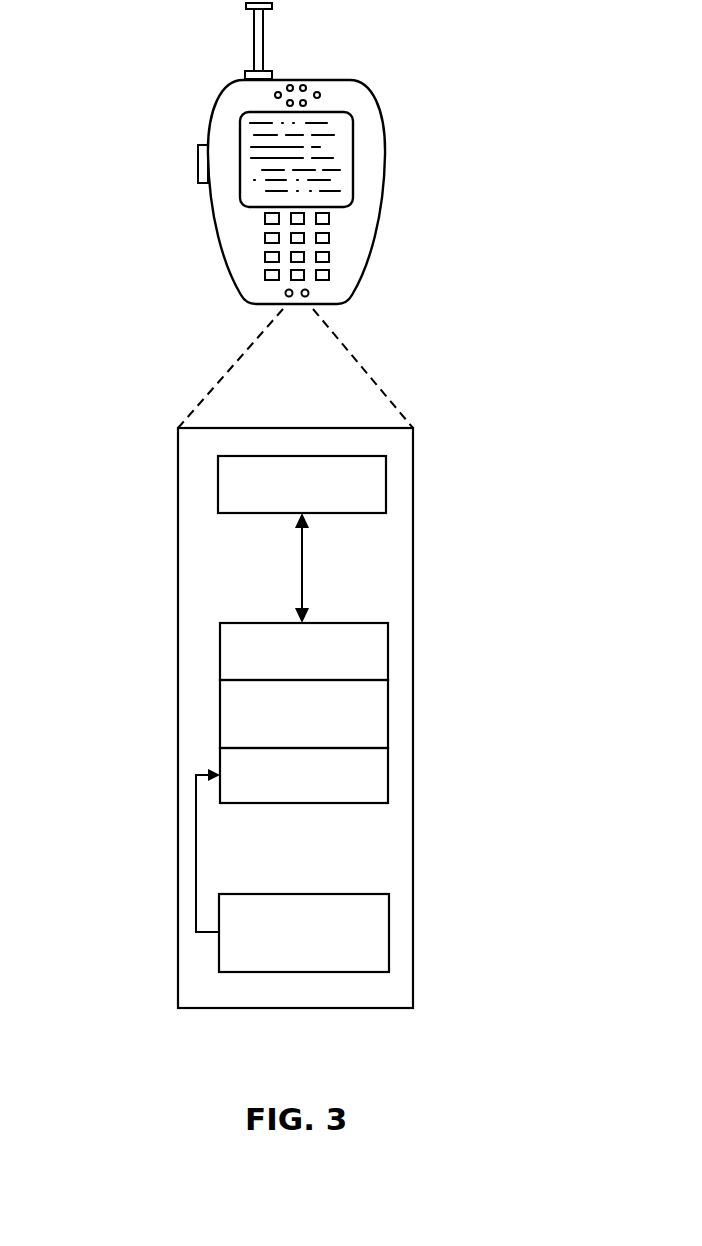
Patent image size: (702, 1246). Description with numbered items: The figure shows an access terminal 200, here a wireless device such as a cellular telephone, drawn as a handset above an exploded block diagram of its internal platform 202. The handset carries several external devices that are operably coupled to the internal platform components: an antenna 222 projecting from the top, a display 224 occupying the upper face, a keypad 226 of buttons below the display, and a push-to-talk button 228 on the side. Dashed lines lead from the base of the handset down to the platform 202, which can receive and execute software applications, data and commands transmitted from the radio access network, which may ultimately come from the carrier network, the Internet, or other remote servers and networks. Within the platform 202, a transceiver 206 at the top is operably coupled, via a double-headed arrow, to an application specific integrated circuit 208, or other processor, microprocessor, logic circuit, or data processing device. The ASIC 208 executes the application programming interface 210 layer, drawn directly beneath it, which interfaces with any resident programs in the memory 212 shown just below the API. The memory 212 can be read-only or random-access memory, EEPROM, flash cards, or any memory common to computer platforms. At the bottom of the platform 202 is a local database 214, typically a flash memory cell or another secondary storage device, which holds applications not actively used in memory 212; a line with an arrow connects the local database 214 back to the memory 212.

The access terminal 200 is at (362, 282).
The platform 202 is at (178, 622).
The transceiver 206 is at (386, 485).
The application specific integrated circuit 208 is at (388, 660).
The application programming interface 210 is at (388, 708).
The memory 212 is at (388, 775).
The local database 214 is at (389, 915).
The antenna 222 is at (263, 18).
The display 224 is at (353, 143).
The keypad 226 is at (329, 238).
The push-to-talk button 228 is at (198, 155).